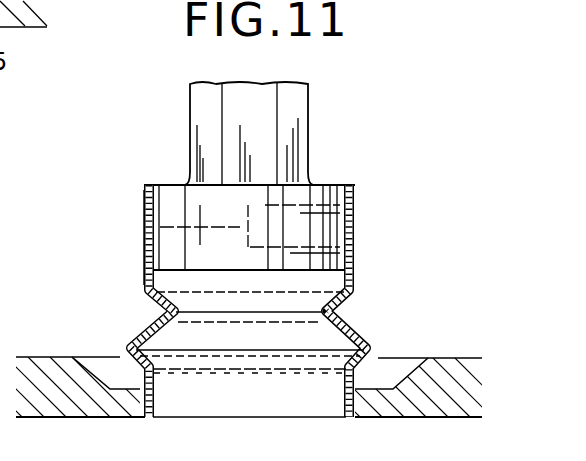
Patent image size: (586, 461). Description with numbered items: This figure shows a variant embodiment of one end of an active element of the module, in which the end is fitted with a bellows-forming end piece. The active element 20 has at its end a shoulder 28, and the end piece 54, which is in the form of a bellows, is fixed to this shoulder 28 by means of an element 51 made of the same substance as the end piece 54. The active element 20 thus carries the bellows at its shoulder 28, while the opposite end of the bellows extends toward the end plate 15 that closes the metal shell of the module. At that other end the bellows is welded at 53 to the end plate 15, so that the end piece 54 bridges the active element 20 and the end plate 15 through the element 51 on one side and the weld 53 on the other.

The end plate 15 is at (57, 393).
The active element 20 is at (235, 103).
The element 51 is at (153, 186).
The end piece 54 is at (148, 228).
The shoulder 28 is at (282, 225).
The weld 53 is at (147, 415).